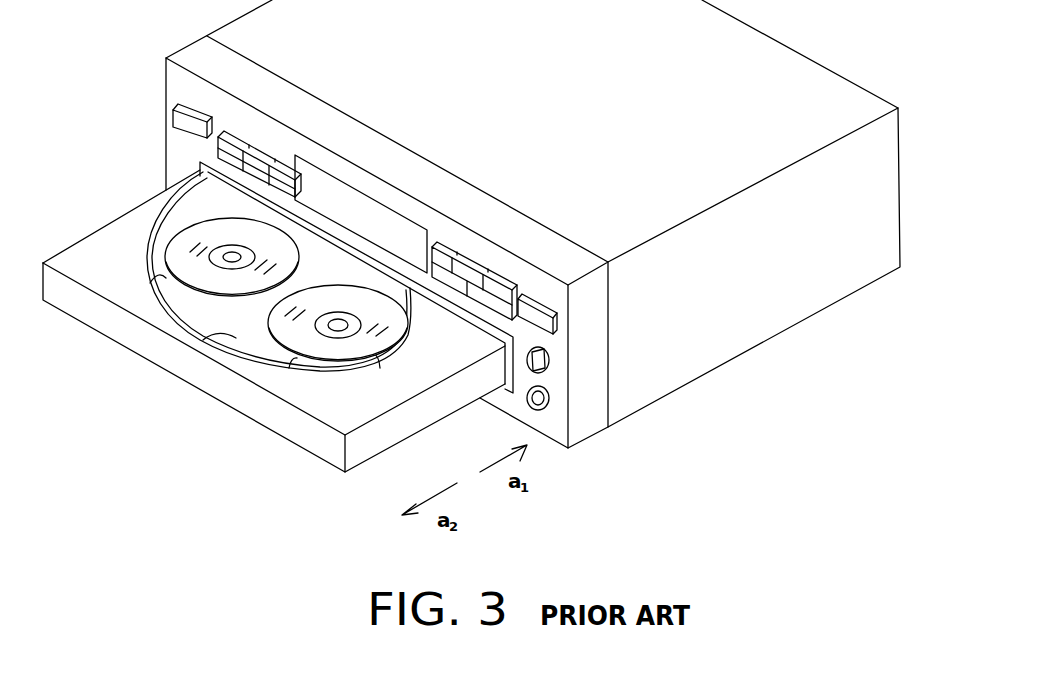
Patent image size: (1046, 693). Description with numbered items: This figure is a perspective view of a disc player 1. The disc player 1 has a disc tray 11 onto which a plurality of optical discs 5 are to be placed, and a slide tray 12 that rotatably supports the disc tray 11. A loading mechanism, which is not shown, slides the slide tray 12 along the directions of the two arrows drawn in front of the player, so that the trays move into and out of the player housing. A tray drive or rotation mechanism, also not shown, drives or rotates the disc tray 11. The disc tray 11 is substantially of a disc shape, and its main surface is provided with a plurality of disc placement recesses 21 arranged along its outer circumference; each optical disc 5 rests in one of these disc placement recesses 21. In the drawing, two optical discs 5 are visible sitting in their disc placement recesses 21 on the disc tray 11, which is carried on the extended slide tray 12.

The disc player 1 is at (656, 420).
The optical disc 5 is at (197, 230).
The disc tray 11 is at (207, 333).
The slide tray 12 is at (343, 423).
The disc placement recess 21 is at (190, 283).